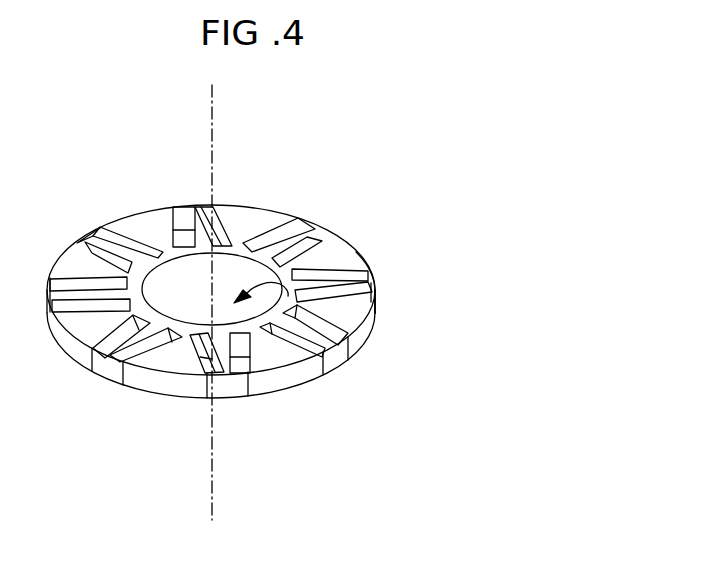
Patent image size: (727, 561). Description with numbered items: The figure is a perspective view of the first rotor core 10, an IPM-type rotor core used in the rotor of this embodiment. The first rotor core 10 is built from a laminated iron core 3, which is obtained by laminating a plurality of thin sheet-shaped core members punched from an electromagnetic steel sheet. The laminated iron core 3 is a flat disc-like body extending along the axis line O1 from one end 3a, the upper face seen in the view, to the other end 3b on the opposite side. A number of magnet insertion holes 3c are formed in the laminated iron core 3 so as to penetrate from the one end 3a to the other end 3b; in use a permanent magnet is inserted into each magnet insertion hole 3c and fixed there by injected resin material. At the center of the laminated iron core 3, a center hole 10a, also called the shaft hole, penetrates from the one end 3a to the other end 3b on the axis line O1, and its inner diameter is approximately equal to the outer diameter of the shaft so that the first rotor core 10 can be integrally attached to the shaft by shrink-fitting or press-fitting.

The first rotor core 10 is at (370, 175).
The laminated iron core 3 is at (371, 252).
The one end 3a is at (338, 242).
The other end 3b is at (308, 383).
The magnet insertion hole 3c is at (318, 226).
The center hole 10a is at (365, 303).
The axis line O1 is at (210, 289).